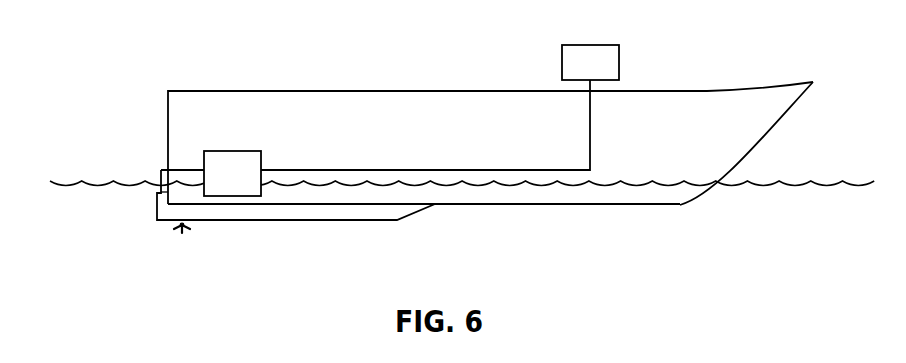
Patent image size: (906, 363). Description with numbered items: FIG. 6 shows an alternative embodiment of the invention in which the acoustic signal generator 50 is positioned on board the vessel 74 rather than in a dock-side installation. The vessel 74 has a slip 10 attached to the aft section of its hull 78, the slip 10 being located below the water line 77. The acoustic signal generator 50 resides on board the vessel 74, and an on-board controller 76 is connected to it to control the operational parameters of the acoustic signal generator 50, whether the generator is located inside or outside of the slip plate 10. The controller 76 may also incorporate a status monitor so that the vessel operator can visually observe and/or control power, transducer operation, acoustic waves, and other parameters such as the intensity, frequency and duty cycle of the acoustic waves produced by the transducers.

The slip 10 is at (270, 221).
The acoustic signal generator 50 is at (232, 151).
The vessel 74 is at (243, 64).
The on-board controller 76 is at (590, 45).
The water line 77 is at (98, 181).
The hull 78 is at (778, 122).